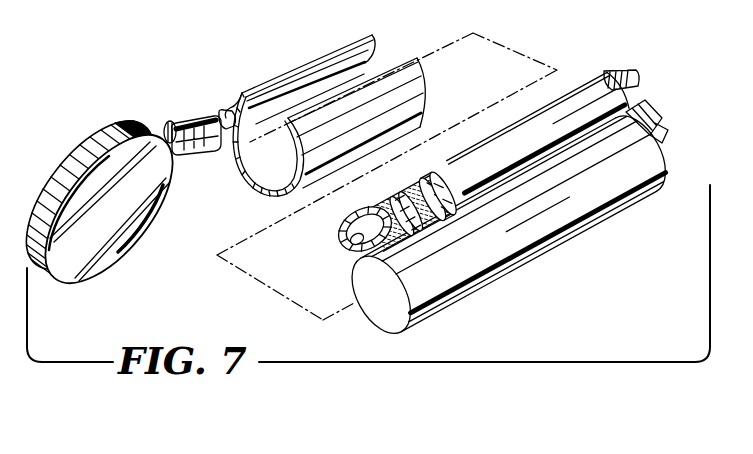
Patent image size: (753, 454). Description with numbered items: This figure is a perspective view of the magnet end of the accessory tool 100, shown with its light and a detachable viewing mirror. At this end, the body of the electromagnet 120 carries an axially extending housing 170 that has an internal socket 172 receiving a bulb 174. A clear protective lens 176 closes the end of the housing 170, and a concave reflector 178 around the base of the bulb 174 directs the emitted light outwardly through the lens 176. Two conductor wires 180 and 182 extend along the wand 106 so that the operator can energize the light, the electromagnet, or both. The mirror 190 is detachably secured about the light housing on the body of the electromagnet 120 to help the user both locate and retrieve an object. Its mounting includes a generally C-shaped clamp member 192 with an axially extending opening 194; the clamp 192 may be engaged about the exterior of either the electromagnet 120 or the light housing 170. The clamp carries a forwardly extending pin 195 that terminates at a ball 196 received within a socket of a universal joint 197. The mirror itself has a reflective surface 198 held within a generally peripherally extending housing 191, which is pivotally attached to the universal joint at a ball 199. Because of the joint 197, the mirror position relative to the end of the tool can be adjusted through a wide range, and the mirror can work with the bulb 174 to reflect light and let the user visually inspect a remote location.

The tool 100 is at (652, 208).
The wand 106 is at (657, 137).
The electromagnet 120 is at (526, 238).
The housing 170 is at (566, 91).
The internal socket 172 is at (409, 206).
The bulb 174 is at (348, 228).
The clear protective lens 176 is at (350, 243).
The reflector 178 is at (402, 236).
The conductor wire 180 is at (440, 177).
The conductor wire 182 is at (466, 172).
The mirror 190 is at (100, 218).
The housing 191 is at (89, 143).
The C-shaped clamp member 192 is at (427, 96).
The axially extending opening 194 is at (352, 105).
The pin 195 is at (230, 110).
The ball 196 is at (222, 115).
The universal joint 197 is at (188, 122).
The reflective surface 198 is at (71, 259).
The ball 199 is at (169, 128).